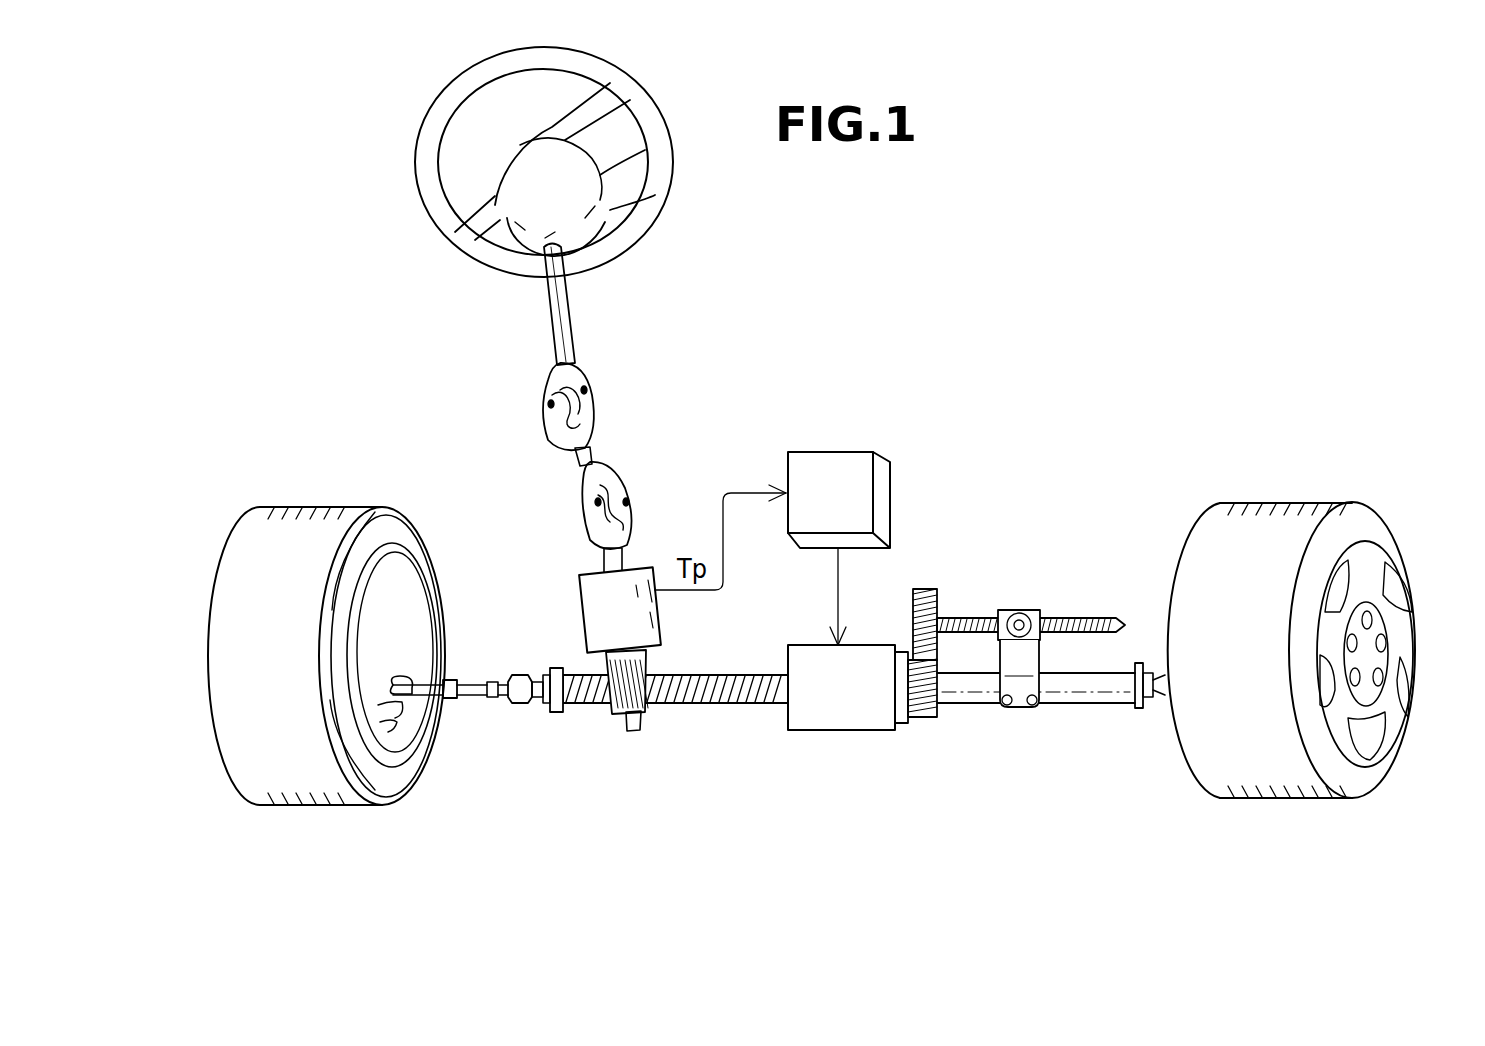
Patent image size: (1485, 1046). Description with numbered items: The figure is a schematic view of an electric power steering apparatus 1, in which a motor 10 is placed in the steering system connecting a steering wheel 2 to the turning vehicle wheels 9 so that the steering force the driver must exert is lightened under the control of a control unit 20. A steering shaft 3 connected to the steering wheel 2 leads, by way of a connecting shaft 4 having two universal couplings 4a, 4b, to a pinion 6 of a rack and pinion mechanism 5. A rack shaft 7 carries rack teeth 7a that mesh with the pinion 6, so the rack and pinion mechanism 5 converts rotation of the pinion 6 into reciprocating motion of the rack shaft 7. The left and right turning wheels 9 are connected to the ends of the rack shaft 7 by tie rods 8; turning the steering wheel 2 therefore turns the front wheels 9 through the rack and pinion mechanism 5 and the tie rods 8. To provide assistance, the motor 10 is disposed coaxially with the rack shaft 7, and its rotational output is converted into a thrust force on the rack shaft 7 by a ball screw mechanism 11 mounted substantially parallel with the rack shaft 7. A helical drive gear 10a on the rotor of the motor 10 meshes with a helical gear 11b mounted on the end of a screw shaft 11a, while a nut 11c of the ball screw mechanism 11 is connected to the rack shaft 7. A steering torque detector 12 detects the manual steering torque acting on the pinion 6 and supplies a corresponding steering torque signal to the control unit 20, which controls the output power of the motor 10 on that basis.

The electric power steering apparatus 1 is at (1021, 245).
The steering wheel 2 is at (442, 118).
The steering shaft 3 is at (574, 310).
The connecting shaft 4 is at (614, 461).
The universal coupling 4a is at (585, 375).
The universal coupling 4b is at (617, 466).
The rack and pinion mechanism 5 is at (692, 817).
The pinion 6 is at (616, 714).
The rack shaft 7 is at (665, 738).
The rack teeth 7a is at (683, 705).
The tie rod 8 is at (479, 698).
The turning wheel 9 is at (315, 807).
The motor 10 is at (879, 747).
The helical drive gear 10a is at (921, 719).
The ball screw mechanism 11 is at (1025, 576).
The screw shaft 11a is at (1083, 618).
The helical gear 11b is at (931, 588).
The nut 11c is at (1029, 609).
The steering torque detector 12 is at (578, 600).
The control unit 20 is at (843, 452).